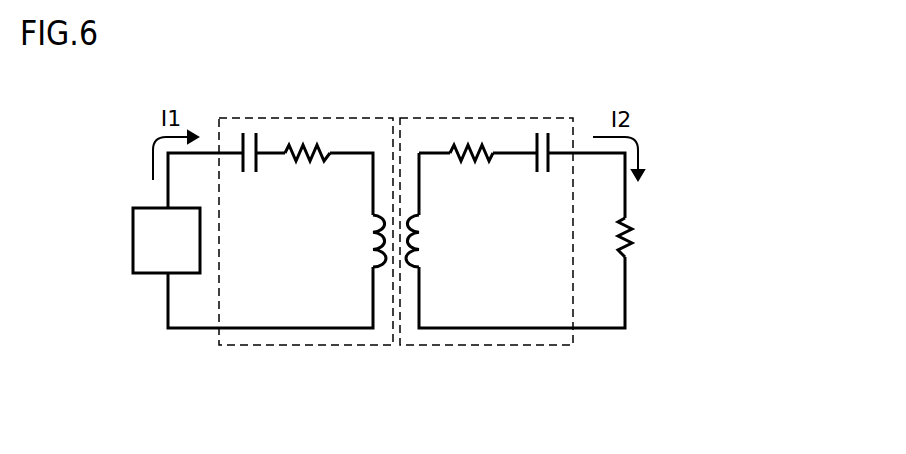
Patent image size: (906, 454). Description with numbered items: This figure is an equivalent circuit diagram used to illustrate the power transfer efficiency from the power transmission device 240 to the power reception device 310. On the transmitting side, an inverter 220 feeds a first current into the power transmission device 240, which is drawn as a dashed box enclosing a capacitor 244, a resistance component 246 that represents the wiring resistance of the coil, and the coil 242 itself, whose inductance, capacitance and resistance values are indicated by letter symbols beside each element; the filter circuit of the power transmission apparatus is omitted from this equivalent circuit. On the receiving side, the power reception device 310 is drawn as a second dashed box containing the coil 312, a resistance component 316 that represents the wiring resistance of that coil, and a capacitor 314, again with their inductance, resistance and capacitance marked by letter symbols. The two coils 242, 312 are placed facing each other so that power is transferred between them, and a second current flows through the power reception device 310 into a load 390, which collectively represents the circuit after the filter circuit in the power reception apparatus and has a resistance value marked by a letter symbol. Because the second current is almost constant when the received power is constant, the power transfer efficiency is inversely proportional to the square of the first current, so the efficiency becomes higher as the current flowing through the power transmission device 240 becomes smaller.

The inverter 220 is at (133, 240).
The power transmission device 240 is at (305, 346).
The coil 242 is at (386, 215).
The capacitor 244 is at (244, 132).
The resistance component 246 is at (307, 145).
The power reception device 310 is at (498, 346).
The coil 312 is at (407, 268).
The capacitor 314 is at (541, 132).
The resistance component 316 is at (470, 145).
The load 390 is at (632, 230).